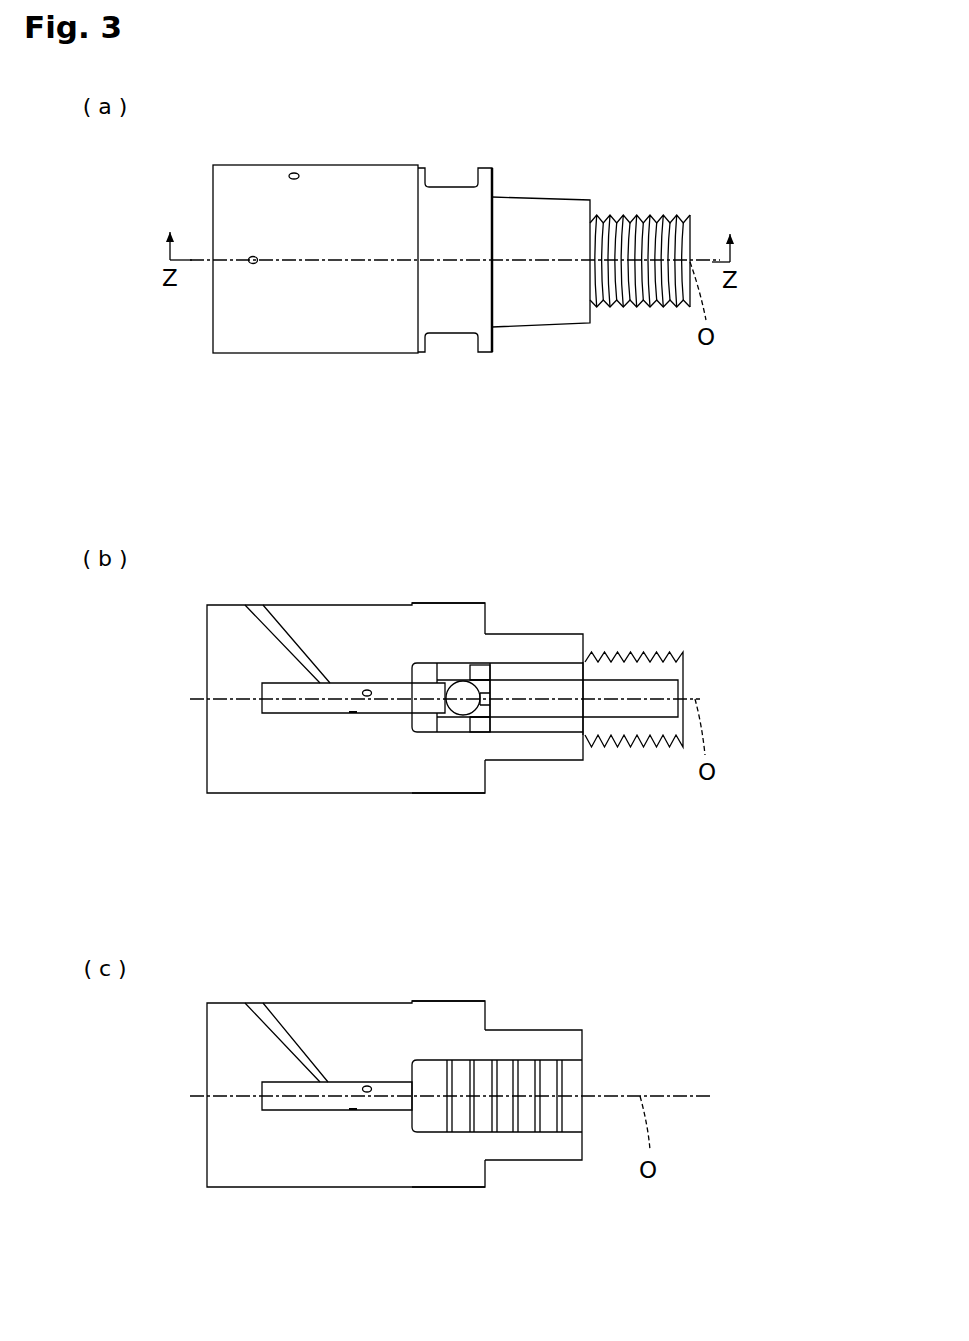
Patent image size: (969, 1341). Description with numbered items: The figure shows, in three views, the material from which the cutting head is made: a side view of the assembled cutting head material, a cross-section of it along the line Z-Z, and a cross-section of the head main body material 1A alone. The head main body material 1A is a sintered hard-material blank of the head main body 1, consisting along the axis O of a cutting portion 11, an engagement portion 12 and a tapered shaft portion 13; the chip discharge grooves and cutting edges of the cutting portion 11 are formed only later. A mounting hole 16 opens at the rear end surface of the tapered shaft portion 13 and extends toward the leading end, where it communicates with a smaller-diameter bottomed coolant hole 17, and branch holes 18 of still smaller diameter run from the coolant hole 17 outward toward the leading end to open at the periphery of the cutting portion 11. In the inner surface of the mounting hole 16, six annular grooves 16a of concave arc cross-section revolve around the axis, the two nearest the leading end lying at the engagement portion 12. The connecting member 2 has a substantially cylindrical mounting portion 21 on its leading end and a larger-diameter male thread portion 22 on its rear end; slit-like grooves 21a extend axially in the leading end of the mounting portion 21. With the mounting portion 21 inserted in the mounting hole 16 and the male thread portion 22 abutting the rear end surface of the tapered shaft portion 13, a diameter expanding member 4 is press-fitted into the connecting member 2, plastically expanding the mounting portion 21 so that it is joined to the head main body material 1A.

The head main body 1 is at (448, 656).
The head main body material 1A is at (352, 150).
The cutting portion 11 is at (242, 156).
The engagement portion 12 is at (450, 170).
The tapered shaft portion 13 is at (541, 190).
The branch holes 18 is at (294, 173).
The coolant hole 17 is at (268, 715).
The mounting hole 16 is at (423, 735).
The annular grooves 16a is at (448, 733).
The diameter expanding member 4 is at (462, 682).
The connecting member 2 is at (652, 210).
The mounting portion 21 is at (552, 666).
The groove 21a is at (484, 729).
The male thread portion 22 is at (662, 307).